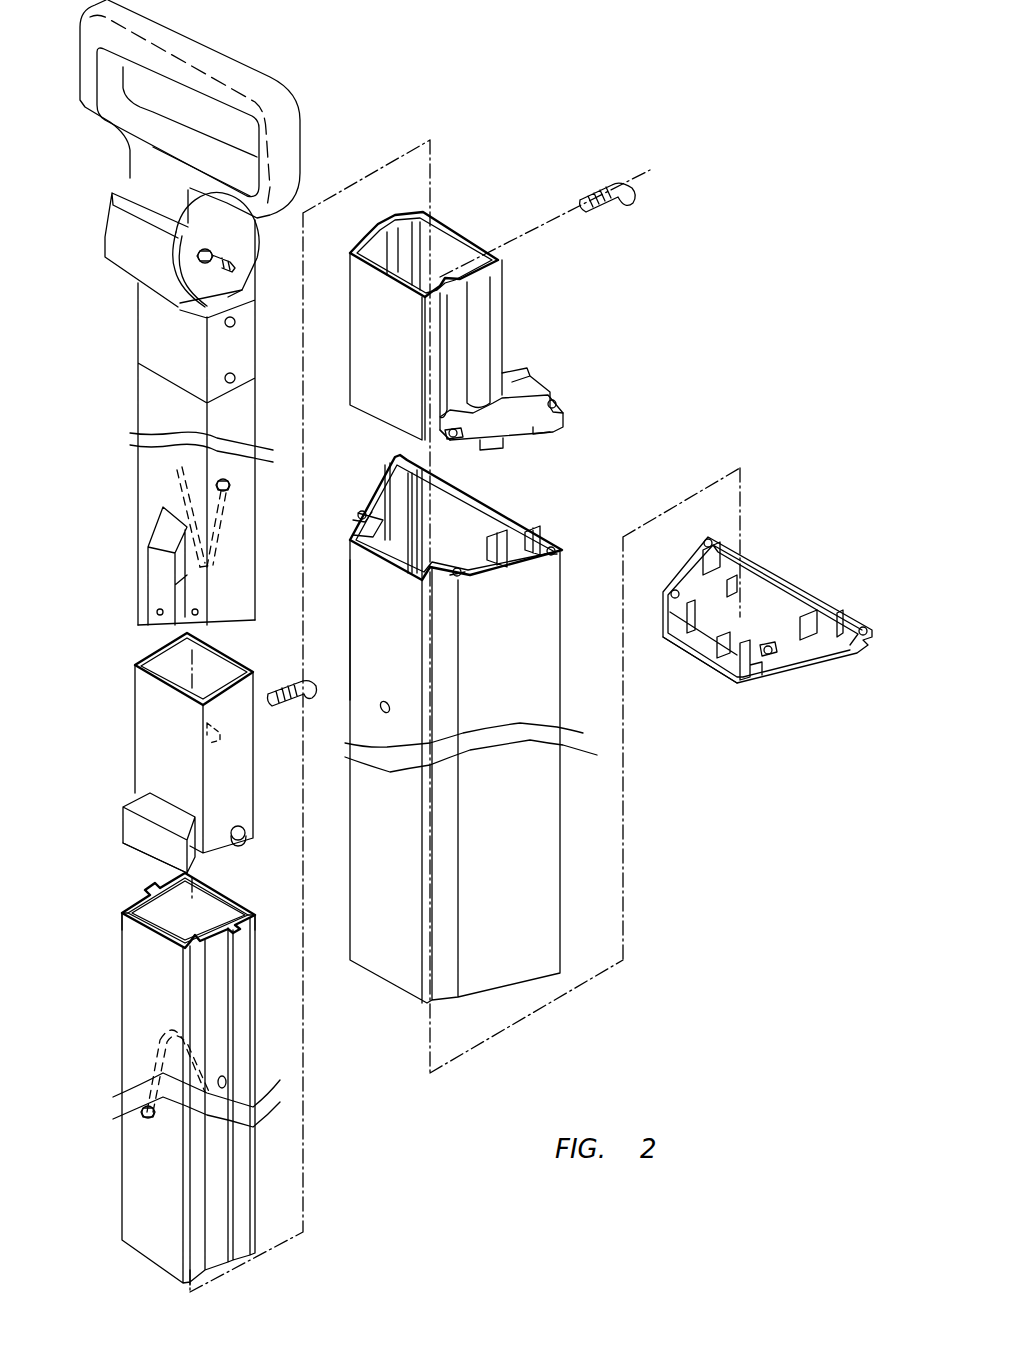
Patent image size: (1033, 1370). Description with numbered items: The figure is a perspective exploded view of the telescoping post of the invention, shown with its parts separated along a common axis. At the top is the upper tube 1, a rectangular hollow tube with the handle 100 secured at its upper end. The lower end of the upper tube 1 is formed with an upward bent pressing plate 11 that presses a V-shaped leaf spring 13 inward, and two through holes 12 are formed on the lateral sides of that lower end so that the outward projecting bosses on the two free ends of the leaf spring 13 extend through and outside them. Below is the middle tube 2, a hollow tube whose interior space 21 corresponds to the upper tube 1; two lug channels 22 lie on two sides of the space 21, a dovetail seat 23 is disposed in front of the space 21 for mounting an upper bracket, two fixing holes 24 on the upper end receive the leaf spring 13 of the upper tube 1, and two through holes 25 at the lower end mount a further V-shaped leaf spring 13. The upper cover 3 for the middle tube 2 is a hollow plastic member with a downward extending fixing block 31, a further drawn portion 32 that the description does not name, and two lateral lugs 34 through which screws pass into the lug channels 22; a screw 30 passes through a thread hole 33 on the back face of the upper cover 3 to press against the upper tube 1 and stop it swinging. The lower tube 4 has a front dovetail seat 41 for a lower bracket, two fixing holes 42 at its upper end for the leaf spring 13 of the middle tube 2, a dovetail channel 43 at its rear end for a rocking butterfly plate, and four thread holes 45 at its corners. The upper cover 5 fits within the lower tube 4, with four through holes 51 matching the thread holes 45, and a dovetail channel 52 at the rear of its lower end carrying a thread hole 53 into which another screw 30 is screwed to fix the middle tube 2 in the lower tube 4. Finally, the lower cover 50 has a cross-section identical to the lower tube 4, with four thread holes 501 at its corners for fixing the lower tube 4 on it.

The handle 100 is at (250, 68).
The upper tube 1 is at (127, 507).
The pressing plate 11 is at (160, 587).
The through holes 12 is at (228, 482).
The V-shaped leaf spring 13 is at (212, 535).
The upper cover 3 is at (122, 712).
The fixing block 31 is at (125, 832).
The block 32 is at (122, 803).
The thread hole 33 is at (216, 736).
The lateral lugs 34 is at (247, 832).
The middle tube 2 is at (95, 988).
The interior space 21 is at (205, 904).
The lug channels 22 is at (258, 925).
The dovetail seat 23 is at (140, 910).
The fixing holes 24 is at (225, 1082).
The through holes 25 is at (148, 1118).
The screw 30 is at (634, 190).
The lower tube 4 is at (573, 545).
The front dovetail seat 41 is at (340, 633).
The fixing holes 42 is at (340, 725).
The dovetail channel 43 is at (483, 507).
The thread holes 45 is at (568, 555).
The upper cover 5 is at (440, 195).
The through holes 51 is at (553, 400).
The dovetail channel 52 is at (513, 355).
The thread hole 53 is at (447, 278).
The lower cover 50 is at (808, 570).
The thread holes 501 is at (770, 665).